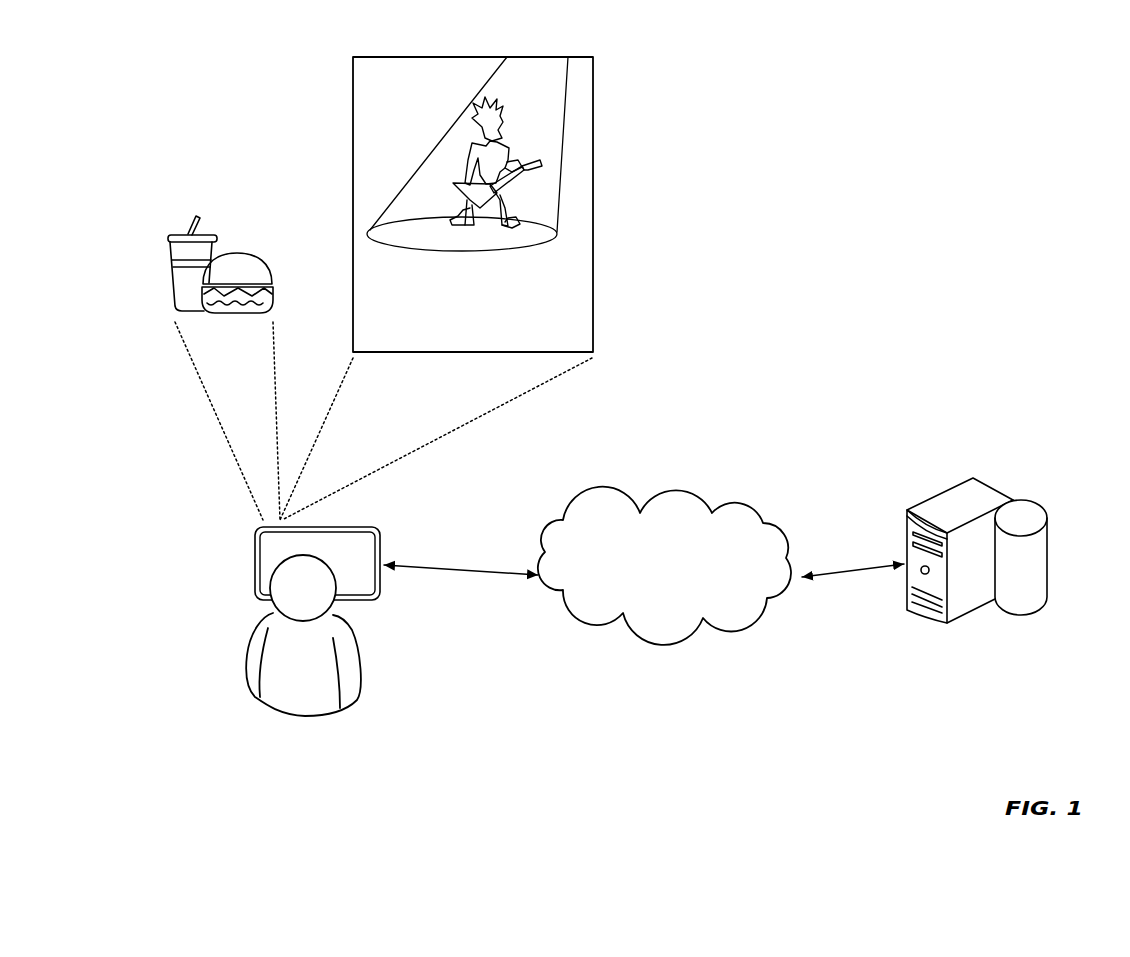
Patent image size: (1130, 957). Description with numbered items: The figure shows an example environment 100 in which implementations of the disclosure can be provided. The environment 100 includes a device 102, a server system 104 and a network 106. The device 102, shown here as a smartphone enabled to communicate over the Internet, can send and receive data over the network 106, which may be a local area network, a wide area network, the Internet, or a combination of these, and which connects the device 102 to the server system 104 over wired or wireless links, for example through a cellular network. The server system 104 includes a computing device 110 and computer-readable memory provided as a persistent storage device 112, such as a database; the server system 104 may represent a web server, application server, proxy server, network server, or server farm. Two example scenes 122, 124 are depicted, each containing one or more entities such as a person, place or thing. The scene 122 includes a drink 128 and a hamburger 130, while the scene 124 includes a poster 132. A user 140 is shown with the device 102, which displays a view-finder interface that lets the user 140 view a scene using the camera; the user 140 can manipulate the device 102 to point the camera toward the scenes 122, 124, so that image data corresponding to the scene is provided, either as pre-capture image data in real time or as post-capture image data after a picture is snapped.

The example environment 100 is at (830, 304).
The device 102 is at (382, 537).
The server system 104 is at (931, 646).
The network 106 is at (664, 566).
The computing device 110 is at (990, 483).
The persistent storage device 112 is at (1047, 517).
The scene 122 is at (161, 205).
The scene 124 is at (617, 82).
The drink 128 is at (170, 268).
The hamburger 130 is at (240, 253).
The poster 132 is at (593, 178).
The user 140 is at (247, 657).